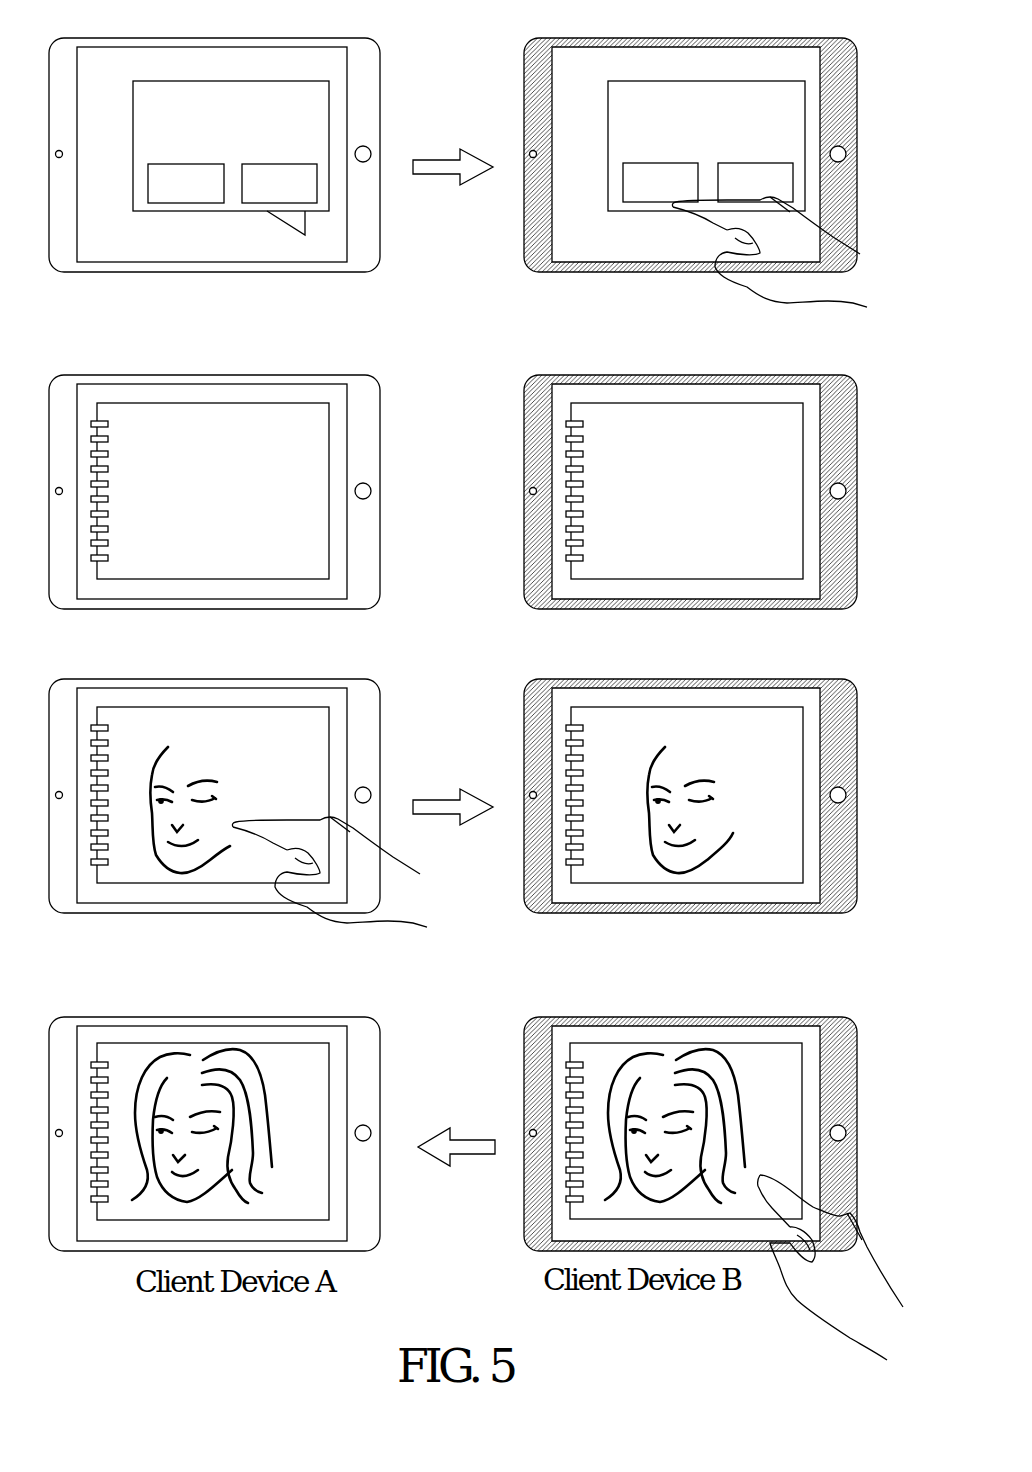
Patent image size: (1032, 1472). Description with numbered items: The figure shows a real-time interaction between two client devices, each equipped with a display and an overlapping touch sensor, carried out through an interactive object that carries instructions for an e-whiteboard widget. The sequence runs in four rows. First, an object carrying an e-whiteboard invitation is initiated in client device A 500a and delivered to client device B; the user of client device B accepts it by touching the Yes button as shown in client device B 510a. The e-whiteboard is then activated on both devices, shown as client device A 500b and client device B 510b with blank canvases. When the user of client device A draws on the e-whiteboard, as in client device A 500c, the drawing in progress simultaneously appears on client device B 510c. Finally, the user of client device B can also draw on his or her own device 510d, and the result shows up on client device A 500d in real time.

The client device A 500a is at (214, 140).
The client device B 510a is at (690, 140).
The client device A 500b is at (214, 476).
The client device B 510b is at (690, 476).
The client device A 500c is at (214, 780).
The client device B 510c is at (690, 780).
The client device A 500d is at (214, 1117).
The client device B 510d is at (690, 1117).